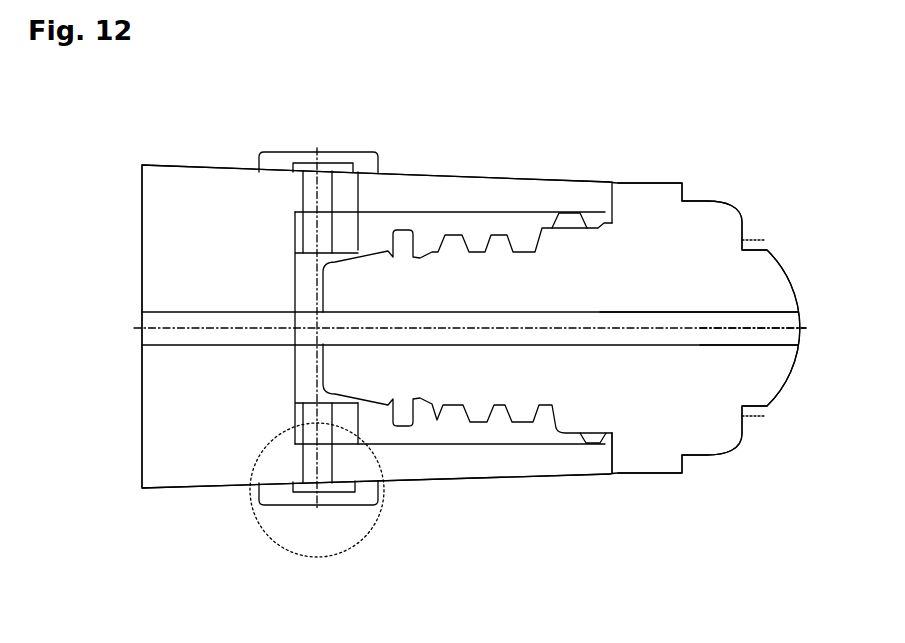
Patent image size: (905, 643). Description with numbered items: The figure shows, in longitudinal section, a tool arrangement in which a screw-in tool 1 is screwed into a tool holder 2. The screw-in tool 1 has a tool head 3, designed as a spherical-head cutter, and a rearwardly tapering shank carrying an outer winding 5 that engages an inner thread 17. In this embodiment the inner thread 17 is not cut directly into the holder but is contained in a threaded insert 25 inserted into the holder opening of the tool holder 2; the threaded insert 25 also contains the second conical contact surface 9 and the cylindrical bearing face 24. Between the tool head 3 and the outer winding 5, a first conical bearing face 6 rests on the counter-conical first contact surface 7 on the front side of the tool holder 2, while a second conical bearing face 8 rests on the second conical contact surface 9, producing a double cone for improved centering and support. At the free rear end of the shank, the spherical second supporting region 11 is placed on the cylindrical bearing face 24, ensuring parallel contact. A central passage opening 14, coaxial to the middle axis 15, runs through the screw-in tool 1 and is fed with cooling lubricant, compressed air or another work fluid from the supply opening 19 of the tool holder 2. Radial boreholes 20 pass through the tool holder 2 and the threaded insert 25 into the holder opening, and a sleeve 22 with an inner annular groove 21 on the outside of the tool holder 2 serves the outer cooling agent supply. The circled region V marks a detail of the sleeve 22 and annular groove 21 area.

The screw-in tool 1 is at (793, 188).
The tool holder 2 is at (178, 505).
The tool head 3 is at (710, 358).
The outer winding 5 is at (432, 410).
The first conical bearing face 6 is at (603, 474).
The first contact surface 7 is at (626, 182).
The second conical bearing face 8 is at (570, 440).
The second conical contact surface 9 is at (600, 227).
The second supporting region 11 is at (363, 403).
The passage opening 14 is at (772, 337).
The middle axis 15 is at (752, 328).
The inner thread 17 is at (500, 223).
The supply opening 19 is at (157, 338).
The radial boreholes 20 is at (312, 203).
The annular groove 21 is at (328, 488).
The sleeve 22 is at (272, 492).
The cylindrical bearing face 24 is at (358, 172).
The threaded insert 25 is at (452, 215).
The detail V is at (363, 543).